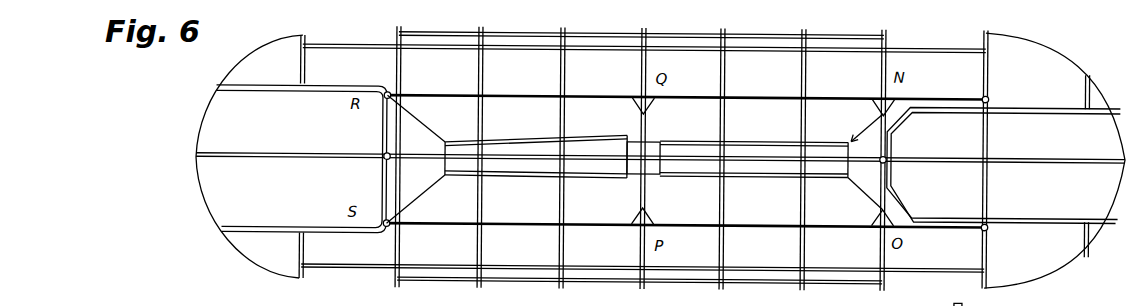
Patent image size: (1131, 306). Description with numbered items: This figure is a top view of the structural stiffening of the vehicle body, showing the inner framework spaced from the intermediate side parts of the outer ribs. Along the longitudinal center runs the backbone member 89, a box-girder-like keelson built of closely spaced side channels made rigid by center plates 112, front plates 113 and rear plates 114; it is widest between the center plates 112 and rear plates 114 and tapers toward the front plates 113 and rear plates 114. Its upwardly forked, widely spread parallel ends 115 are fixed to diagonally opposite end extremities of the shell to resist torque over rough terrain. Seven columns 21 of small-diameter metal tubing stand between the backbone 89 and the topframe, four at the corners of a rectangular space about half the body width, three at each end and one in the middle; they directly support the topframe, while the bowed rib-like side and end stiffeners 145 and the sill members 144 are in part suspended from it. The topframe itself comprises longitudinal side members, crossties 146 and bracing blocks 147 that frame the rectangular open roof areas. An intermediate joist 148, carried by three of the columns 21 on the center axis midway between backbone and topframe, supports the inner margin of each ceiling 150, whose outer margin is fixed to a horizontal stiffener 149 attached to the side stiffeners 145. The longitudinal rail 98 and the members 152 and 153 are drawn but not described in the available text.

The columns 21 is at (385, 94).
The backbone member 89 is at (758, 143).
The longitudinal rail 98 is at (532, 95).
The center plates 112 is at (653, 178).
The front plates 113 is at (851, 127).
The rear plates 114 is at (416, 196).
The forked ends 115 is at (309, 91).
The sill members 144 is at (540, 24).
The side stiffeners 145 is at (800, 28).
The crossties 146 is at (393, 130).
The bracing blocks 147 is at (636, 105).
The intermediate joist 148 is at (710, 155).
The horizontal stiffener 149 is at (942, 40).
The ceiling 150 is at (943, 303).
The member 152 is at (673, 302).
The member 153 is at (783, 302).